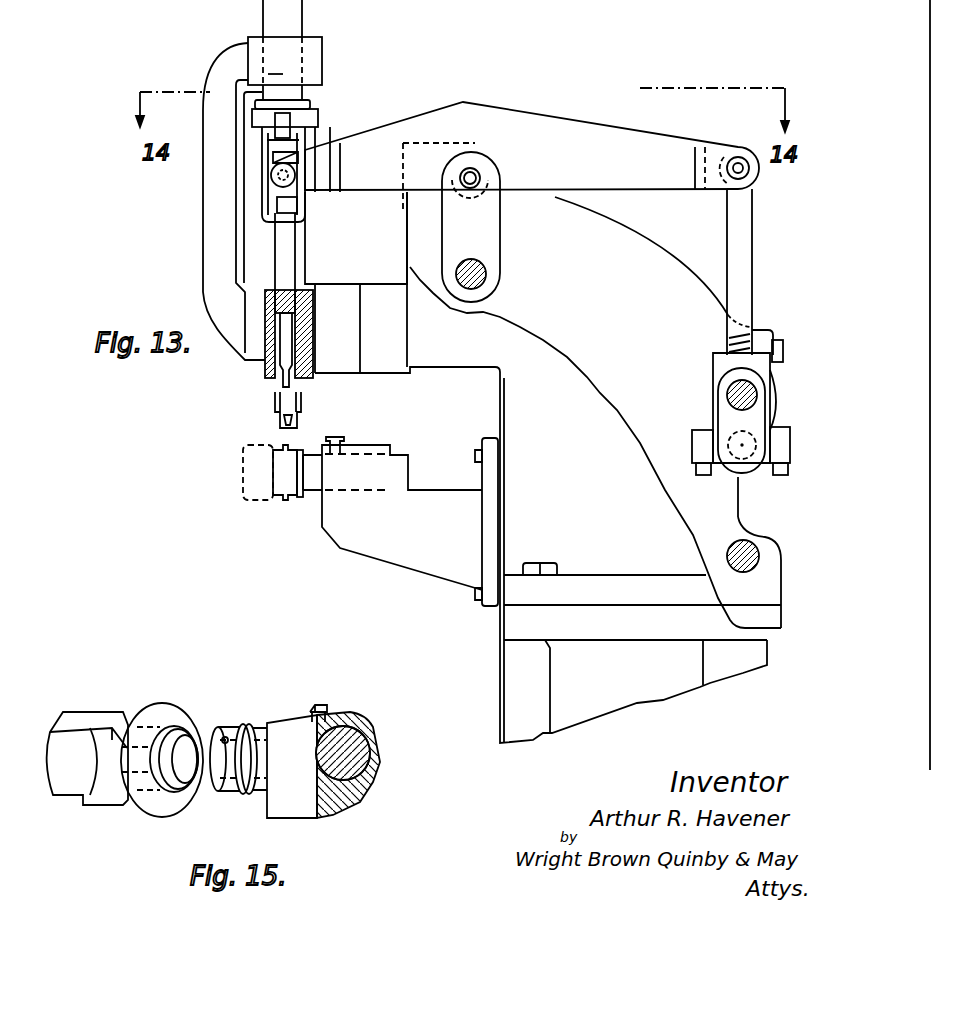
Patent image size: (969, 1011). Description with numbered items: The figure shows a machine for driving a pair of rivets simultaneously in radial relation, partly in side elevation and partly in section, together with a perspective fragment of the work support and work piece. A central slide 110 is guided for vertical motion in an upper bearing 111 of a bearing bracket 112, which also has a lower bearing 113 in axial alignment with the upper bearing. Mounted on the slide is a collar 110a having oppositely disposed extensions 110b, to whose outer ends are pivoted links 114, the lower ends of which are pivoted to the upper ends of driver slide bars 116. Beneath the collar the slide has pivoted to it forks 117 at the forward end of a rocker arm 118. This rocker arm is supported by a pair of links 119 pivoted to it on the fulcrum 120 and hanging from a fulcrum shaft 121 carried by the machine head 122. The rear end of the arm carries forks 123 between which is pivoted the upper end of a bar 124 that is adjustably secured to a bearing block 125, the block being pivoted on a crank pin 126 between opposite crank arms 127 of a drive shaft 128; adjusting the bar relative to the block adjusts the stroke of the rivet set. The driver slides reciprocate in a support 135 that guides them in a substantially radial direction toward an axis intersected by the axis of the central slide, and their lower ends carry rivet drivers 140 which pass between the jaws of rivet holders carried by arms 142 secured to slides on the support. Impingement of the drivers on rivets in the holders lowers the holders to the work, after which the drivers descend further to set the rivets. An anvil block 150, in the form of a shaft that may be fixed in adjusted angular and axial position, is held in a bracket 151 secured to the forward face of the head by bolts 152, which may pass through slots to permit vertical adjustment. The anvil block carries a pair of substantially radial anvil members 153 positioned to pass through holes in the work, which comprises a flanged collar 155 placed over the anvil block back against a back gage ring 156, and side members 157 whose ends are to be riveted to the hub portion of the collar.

In FIG. 13, the central slide 110 is at (287, 12).
In FIG. 13, the collar 110a is at (318, 100).
In FIG. 13, the extensions 110b is at (296, 120).
In FIG. 13, the upper bearing 111 is at (310, 52).
In FIG. 13, the bearing bracket 112 is at (205, 177).
In FIG. 13, the lower bearing 113 is at (310, 290).
In FIG. 13, the links 114 is at (266, 193).
In FIG. 13, the driver slide bars 116 is at (280, 242).
In FIG. 13, the forks 117 is at (317, 185).
In FIG. 13, the rocker arm 118 is at (487, 117).
In FIG. 13, the links 119 is at (482, 235).
In FIG. 13, the fulcrum 120 is at (482, 177).
In FIG. 13, the fulcrum shaft 121 is at (483, 272).
In FIG. 13, the machine head 122 is at (585, 397).
In FIG. 13, the forks 123 is at (717, 152).
In FIG. 13, the bar 124 is at (737, 233).
In FIG. 13, the bearing block 125 is at (713, 377).
In FIG. 13, the crank pin 126 is at (723, 473).
In FIG. 13, the crank arms 127 is at (723, 427).
In FIG. 13, the drive shaft 128 is at (731, 400).
In FIG. 13, the support 135 is at (397, 368).
In FIG. 13, the rivet drivers 140 is at (277, 385).
In FIG. 13, the arms 142 is at (303, 403).
In FIG. 13, the anvil block 150 is at (315, 477).
In FIG. 15, the anvil block 150 is at (267, 727).
In FIG. 13, the bracket 151 is at (398, 547).
In FIG. 15, the bracket 151 is at (355, 714).
In FIG. 13, the bolts 152 is at (477, 593).
In FIG. 13, the anvil members 153 is at (290, 460).
In FIG. 15, the anvil members 153 is at (229, 738).
In FIG. 13, the flanged collar 155 is at (290, 500).
In FIG. 15, the flanged collar 155 is at (170, 708).
In FIG. 13, the back gage ring 156 is at (300, 498).
In FIG. 15, the back gage ring 156 is at (243, 794).
In FIG. 13, the side members 157 is at (273, 497).
In FIG. 15, the side members 157 is at (123, 727).